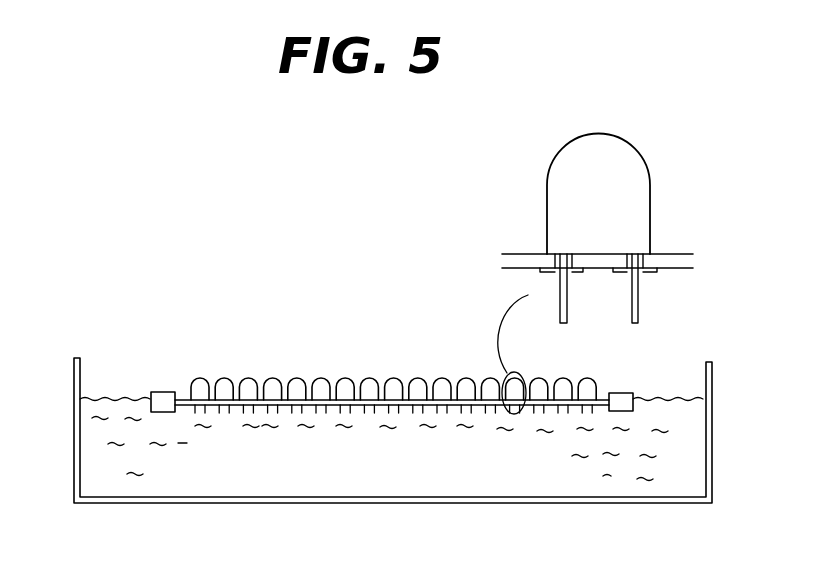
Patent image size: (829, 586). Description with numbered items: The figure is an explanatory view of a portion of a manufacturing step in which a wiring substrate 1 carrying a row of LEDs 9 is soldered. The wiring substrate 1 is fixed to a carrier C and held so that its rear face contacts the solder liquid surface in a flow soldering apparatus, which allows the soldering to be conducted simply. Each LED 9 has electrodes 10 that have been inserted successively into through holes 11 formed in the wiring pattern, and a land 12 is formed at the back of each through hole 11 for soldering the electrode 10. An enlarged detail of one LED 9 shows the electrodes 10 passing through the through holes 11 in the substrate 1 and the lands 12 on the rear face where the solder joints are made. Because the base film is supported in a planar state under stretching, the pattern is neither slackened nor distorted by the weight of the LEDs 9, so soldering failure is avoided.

The wiring substrate 1 is at (527, 260).
The LED 9 is at (652, 208).
The electrode 10 is at (563, 326).
The through hole 11 is at (572, 275).
The land 12 is at (548, 273).
The carrier C is at (168, 393).